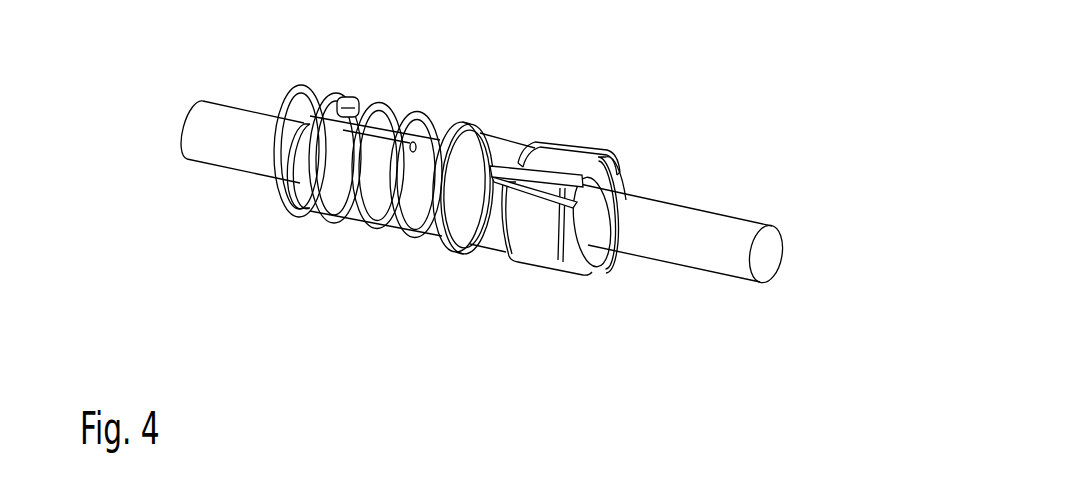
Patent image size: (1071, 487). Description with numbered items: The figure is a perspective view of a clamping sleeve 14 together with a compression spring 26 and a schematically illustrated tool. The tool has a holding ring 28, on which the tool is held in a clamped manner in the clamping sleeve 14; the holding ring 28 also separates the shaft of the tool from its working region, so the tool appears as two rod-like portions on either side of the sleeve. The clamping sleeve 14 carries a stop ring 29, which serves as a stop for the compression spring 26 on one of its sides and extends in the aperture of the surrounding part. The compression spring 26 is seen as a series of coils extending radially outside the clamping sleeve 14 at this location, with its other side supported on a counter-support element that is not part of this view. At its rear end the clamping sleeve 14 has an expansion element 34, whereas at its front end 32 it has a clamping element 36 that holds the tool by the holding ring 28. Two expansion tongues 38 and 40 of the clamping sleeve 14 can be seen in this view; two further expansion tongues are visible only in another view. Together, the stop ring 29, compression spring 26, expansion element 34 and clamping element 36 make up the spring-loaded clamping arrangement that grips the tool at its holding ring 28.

The clamping sleeve 14 is at (472, 230).
The compression spring 26 is at (405, 224).
The holding ring 28 is at (629, 172).
The stop ring 29 is at (478, 126).
The front end 32 is at (484, 173).
The expansion element 34 is at (348, 175).
The clamping element 36 is at (537, 245).
The expansion tongue 38 is at (345, 215).
The expansion tongue 40 is at (352, 101).